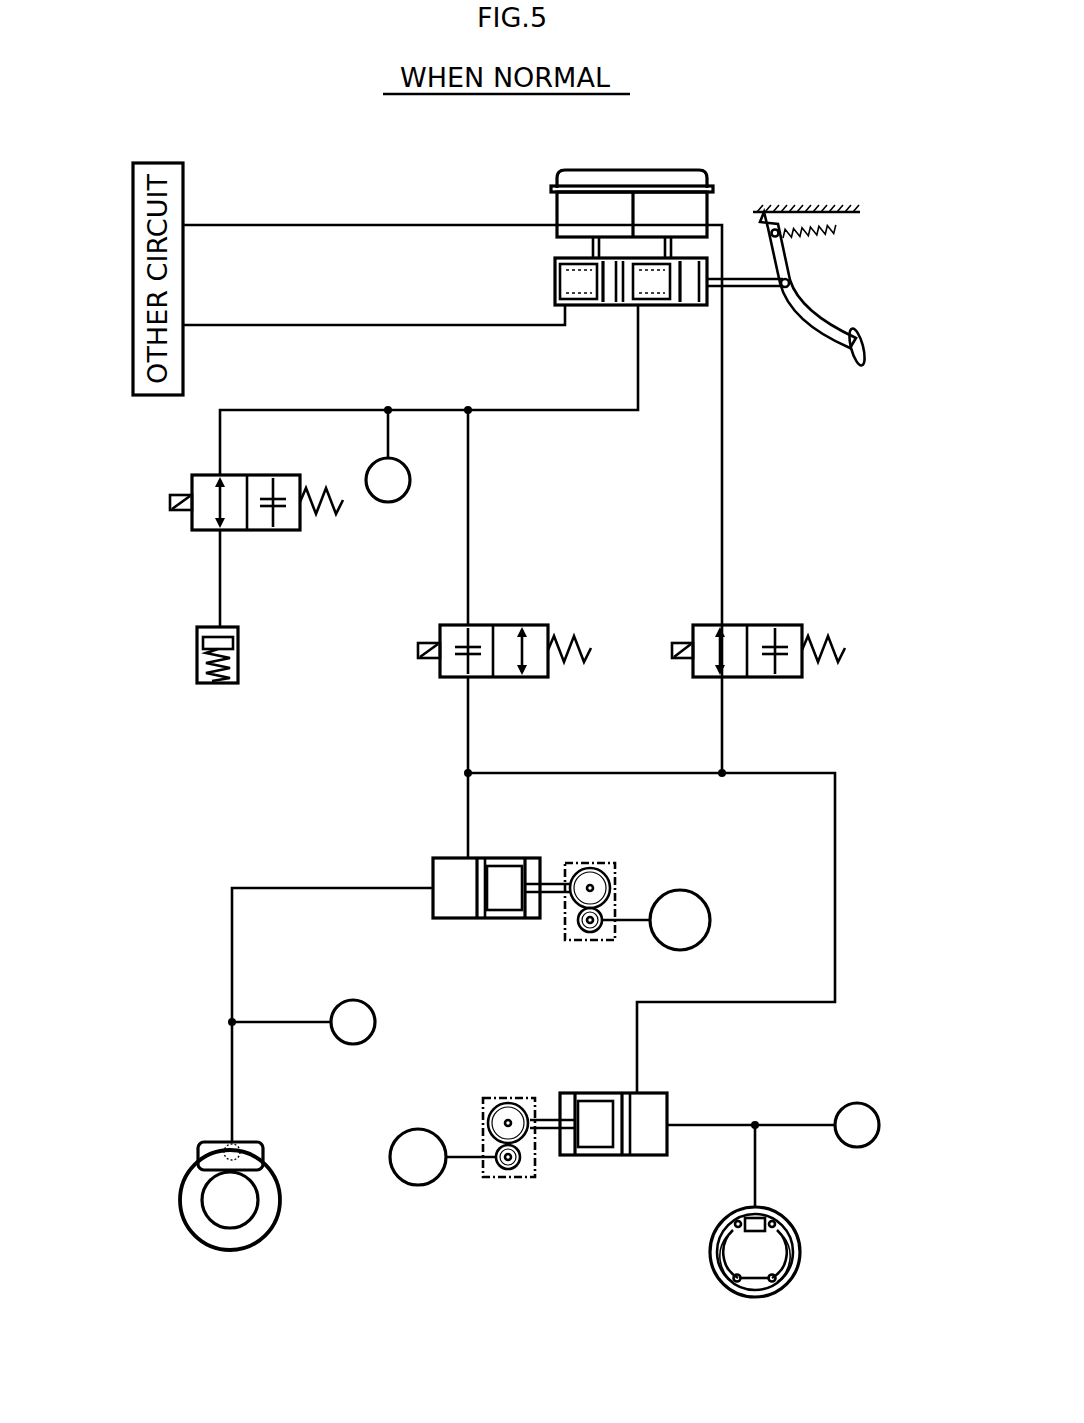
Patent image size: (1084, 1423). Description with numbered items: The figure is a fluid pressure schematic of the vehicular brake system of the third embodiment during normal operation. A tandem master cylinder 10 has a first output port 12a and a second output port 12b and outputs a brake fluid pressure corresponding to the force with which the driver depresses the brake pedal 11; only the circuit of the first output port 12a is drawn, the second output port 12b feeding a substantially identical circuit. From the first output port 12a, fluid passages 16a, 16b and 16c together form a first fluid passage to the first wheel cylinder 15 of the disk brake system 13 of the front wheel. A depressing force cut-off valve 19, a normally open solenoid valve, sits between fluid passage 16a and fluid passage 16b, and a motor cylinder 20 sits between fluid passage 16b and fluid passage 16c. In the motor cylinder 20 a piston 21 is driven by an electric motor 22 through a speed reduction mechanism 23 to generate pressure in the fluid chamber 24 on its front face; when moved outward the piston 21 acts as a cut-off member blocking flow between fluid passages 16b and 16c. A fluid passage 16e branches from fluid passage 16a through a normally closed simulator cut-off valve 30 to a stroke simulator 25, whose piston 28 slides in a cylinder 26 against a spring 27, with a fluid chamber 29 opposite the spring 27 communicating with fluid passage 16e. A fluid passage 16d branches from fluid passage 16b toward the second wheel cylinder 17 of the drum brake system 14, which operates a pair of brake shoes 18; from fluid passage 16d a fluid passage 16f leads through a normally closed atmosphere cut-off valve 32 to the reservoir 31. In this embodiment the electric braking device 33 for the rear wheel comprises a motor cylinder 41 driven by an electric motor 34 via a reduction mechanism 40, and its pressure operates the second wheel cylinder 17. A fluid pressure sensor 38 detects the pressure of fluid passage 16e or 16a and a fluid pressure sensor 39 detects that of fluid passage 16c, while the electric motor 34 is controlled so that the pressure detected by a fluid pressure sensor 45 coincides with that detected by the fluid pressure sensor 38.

The tandem master cylinder 10 is at (607, 306).
The brake pedal 11 is at (856, 368).
The first output port 12a is at (643, 305).
The second output port 12b is at (570, 305).
The disk brake system 13 is at (290, 1216).
The drum brake system 14 is at (767, 1259).
The first wheel cylinder 15 is at (218, 1140).
The fluid passage 16a is at (575, 410).
The fluid passage 16b is at (470, 722).
The fluid passage 16c is at (231, 987).
The fluid passage 16d is at (603, 773).
The fluid passage 16e is at (330, 410).
The fluid passage 16f is at (724, 535).
The second wheel cylinder 17 is at (742, 1230).
The brake shoes 18 is at (723, 1282).
The depressing force cut-off valve 19 is at (447, 682).
The motor cylinder 20 is at (454, 891).
The piston 21 is at (500, 873).
The electric motor 22 is at (710, 928).
The speed reduction mechanism 23 is at (620, 876).
The fluid chamber 24 is at (453, 910).
The stroke simulator 25 is at (200, 656).
The cylinder 26 is at (200, 675).
The spring 27 is at (240, 672).
The piston 28 is at (205, 638).
The fluid chamber 29 is at (240, 630).
The simulator cut-off valve 30 is at (204, 468).
The reservoir 31 is at (557, 210).
The atmosphere cut-off valve 32 is at (705, 622).
The electric braking device 33 is at (631, 1070).
The electric motor 34 is at (390, 1157).
The fluid pressure sensor 38 is at (395, 497).
The fluid pressure sensor 39 is at (373, 1015).
The reduction mechanism 40 is at (475, 1106).
The motor cylinder 41 is at (673, 1100).
The fluid pressure sensor 45 is at (858, 1102).